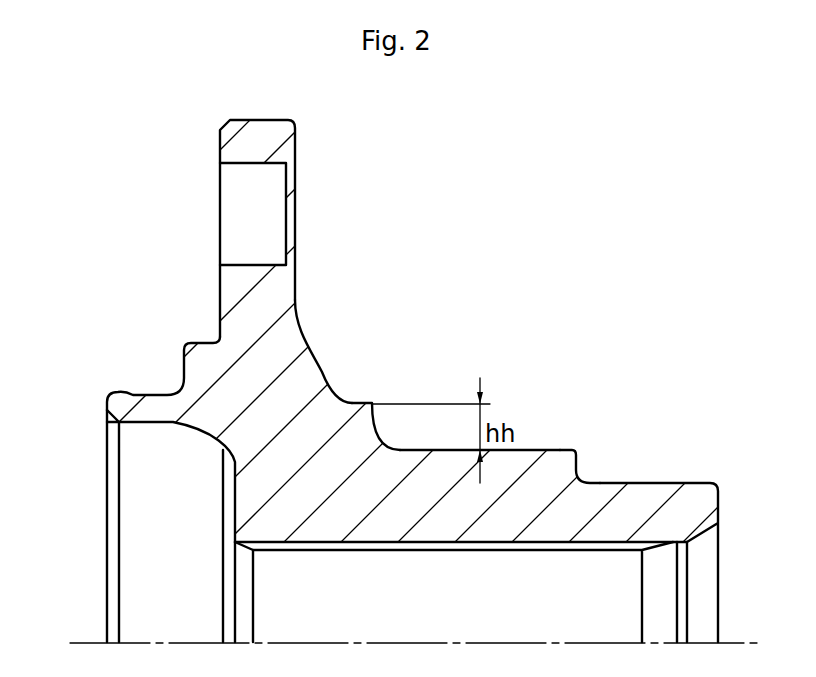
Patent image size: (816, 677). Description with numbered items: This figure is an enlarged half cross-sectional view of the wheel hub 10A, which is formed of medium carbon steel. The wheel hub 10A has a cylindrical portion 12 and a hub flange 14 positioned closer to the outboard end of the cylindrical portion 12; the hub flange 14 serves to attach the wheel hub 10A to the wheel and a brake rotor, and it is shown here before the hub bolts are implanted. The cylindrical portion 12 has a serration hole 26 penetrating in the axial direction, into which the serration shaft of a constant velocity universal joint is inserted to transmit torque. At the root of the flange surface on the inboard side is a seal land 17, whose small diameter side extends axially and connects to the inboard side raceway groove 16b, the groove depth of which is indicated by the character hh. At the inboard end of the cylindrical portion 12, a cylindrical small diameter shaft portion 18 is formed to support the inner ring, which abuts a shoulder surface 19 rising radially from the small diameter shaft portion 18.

The wheel hub 10A is at (408, 350).
The cylindrical portion 12 is at (380, 523).
The hub flange 14 is at (267, 144).
The inboard side raceway groove 16b is at (385, 427).
The seal land 17 is at (327, 368).
The small diameter shaft portion 18 is at (680, 508).
The shoulder surface 19 is at (577, 463).
The serration hole 26 is at (513, 624).